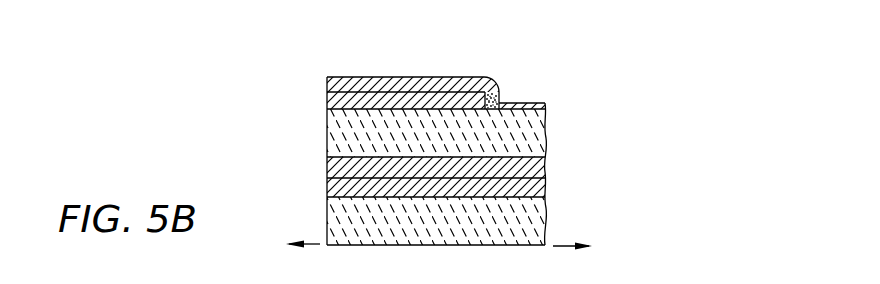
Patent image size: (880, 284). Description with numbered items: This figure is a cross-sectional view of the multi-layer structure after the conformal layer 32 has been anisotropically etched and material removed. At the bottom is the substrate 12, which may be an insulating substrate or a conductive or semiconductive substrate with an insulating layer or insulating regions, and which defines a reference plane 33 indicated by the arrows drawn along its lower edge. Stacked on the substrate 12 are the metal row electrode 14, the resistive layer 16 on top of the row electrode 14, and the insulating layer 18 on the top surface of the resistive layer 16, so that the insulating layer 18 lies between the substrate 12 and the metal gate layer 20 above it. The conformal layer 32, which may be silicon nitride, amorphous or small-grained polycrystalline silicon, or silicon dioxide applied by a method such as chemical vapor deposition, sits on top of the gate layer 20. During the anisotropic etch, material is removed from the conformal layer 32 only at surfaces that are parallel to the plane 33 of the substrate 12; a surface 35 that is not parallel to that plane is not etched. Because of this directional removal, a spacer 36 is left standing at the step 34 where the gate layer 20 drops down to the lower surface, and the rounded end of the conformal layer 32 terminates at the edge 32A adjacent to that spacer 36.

The substrate 12 is at (327, 218).
The metal row electrode 14 is at (327, 190).
The resistive layer 16 is at (327, 166).
The insulating layer 18 is at (327, 137).
The metal gate layer 20 is at (327, 100).
The conformal layer 32 is at (479, 78).
The edge of top layer 32A is at (512, 97).
The plane 33 is at (318, 246).
The step 34 is at (462, 113).
The surface 35 is at (497, 89).
The spacer 36 is at (501, 95).